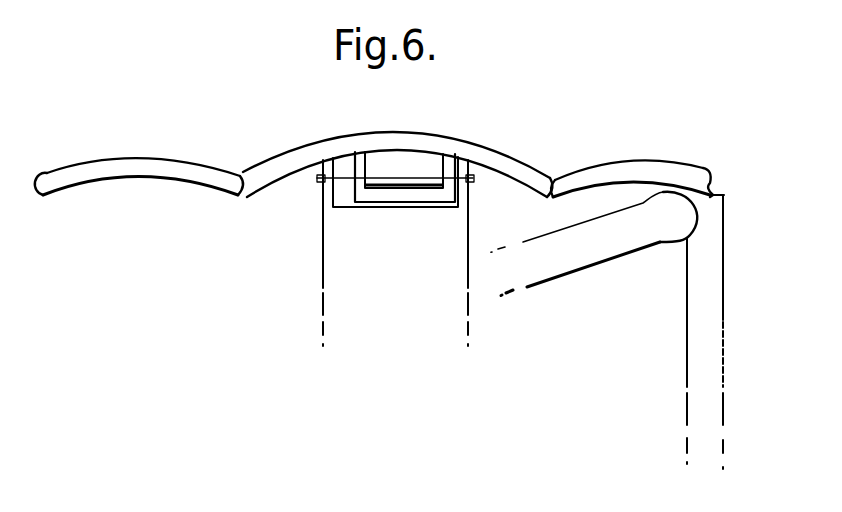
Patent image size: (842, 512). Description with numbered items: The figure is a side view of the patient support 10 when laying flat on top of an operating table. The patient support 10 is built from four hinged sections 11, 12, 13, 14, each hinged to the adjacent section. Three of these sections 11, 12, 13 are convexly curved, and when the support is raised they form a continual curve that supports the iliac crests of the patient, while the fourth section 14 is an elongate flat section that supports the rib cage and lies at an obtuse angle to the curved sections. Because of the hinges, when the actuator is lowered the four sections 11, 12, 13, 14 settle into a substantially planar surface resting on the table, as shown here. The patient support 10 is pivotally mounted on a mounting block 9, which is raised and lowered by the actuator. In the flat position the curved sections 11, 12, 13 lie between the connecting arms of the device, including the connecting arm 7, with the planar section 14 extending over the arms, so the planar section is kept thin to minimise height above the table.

The connecting arm 7 is at (633, 235).
The mounting block 9 is at (327, 200).
The patient support 10 is at (570, 170).
The hinged section 11 is at (152, 163).
The hinged section 12 is at (385, 137).
The hinged section 13 is at (695, 177).
The elongate flat section 14 is at (712, 312).